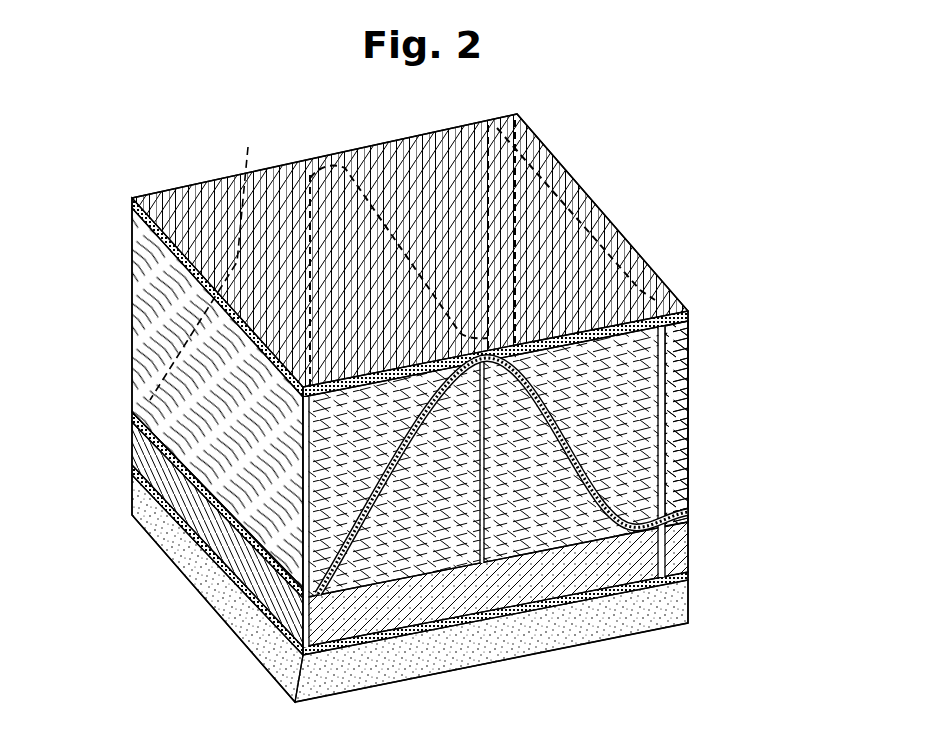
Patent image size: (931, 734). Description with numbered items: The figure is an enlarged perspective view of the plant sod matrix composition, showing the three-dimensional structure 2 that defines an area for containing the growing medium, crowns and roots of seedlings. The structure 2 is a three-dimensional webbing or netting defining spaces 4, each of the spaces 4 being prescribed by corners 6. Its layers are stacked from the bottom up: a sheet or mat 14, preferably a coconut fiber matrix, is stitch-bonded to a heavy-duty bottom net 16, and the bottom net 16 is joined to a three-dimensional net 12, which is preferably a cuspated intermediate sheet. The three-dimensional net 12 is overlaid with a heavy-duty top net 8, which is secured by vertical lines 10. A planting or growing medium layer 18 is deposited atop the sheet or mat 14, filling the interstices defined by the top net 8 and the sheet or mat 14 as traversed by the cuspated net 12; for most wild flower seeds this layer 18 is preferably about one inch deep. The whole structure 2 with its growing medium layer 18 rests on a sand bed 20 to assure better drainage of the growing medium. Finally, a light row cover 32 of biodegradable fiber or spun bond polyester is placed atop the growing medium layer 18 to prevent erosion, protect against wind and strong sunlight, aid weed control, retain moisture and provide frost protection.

The three-dimensional structure 2 is at (140, 165).
The spaces 4 is at (411, 166).
The corners 6 is at (642, 295).
The top net 8 is at (683, 316).
The vertical lines 10 is at (314, 590).
The three-dimensional net 12 is at (250, 146).
The sheet or mat 14 is at (663, 556).
The bottom net 16 is at (685, 575).
The planting or growing medium layer 18 is at (650, 465).
The sand bed 20 is at (527, 637).
The row cover 32 is at (607, 219).